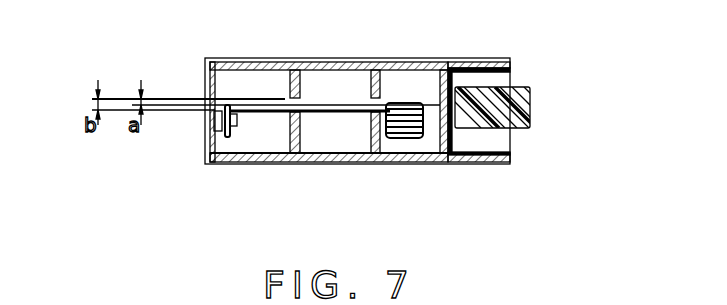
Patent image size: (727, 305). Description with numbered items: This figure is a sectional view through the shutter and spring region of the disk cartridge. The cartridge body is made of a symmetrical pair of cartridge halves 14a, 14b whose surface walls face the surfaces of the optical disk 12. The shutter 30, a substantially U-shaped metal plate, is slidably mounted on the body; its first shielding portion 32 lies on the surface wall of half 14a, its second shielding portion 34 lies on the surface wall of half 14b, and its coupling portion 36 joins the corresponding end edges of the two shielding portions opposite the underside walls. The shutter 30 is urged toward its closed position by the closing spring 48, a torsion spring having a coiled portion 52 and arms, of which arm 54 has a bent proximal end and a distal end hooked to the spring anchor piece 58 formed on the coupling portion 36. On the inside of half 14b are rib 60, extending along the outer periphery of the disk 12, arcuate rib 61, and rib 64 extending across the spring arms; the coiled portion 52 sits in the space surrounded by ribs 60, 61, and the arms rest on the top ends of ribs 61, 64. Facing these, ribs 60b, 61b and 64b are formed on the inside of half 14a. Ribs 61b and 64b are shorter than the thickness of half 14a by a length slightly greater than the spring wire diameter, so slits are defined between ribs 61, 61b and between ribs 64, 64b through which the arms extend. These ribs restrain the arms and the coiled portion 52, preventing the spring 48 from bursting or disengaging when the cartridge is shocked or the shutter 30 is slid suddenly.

The shutter 30 is at (205, 56).
The first shielding portion 32 is at (237, 61).
The second shielding portion 34 is at (302, 163).
The coupling portion 36 is at (205, 147).
The closing spring 48 is at (395, 90).
The coiled portion 52 is at (406, 136).
The arm 54 is at (336, 112).
The spring anchor piece 58 is at (237, 120).
The rib 60 is at (446, 124).
The rib 60b is at (482, 72).
The arcuate rib 61 is at (369, 148).
The rib 61b is at (374, 70).
The rib 64 is at (292, 122).
The rib 64b is at (298, 70).
The disk 12 is at (532, 103).
The cartridge half 14a is at (441, 60).
The cartridge half 14b is at (480, 158).